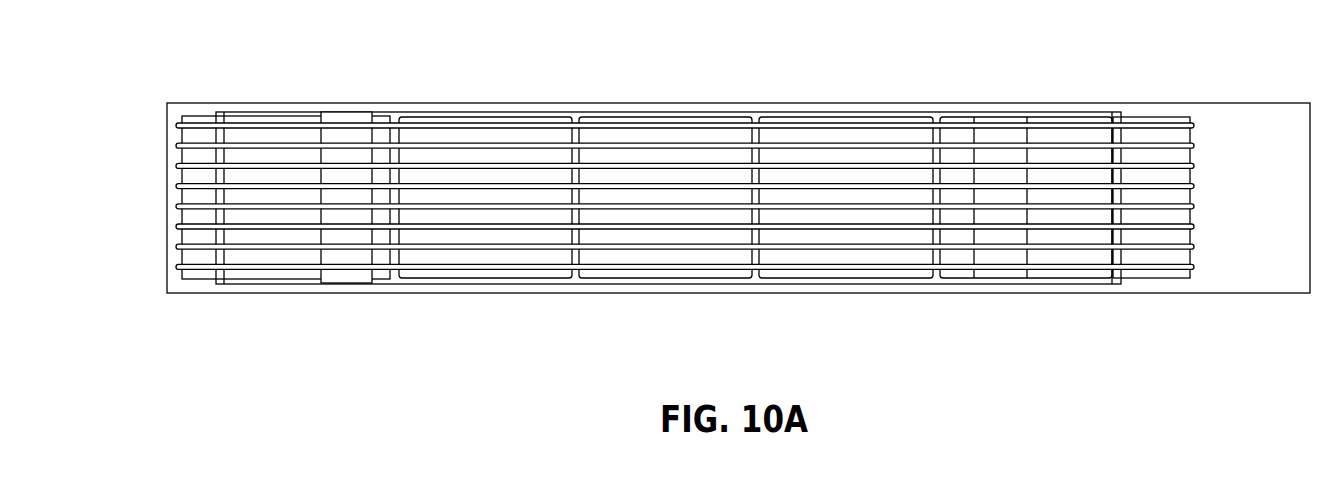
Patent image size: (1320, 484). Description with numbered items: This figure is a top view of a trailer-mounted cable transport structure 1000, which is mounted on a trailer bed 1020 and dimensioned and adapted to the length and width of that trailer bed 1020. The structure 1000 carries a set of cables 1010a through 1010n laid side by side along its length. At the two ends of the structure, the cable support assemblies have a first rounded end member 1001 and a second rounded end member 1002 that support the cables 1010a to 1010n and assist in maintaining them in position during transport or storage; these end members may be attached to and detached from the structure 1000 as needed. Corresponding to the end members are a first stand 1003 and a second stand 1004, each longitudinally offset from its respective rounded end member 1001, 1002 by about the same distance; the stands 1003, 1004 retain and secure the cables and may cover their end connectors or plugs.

The cable transport structure 1000 is at (890, 114).
The first rounded end member 1001 is at (202, 117).
The second rounded end member 1002 is at (1157, 117).
The first stand 1003 is at (349, 112).
The second stand 1004 is at (1002, 112).
The cable 1010a is at (638, 117).
The cable 1010n is at (662, 280).
The trailer bed 1020 is at (1278, 103).